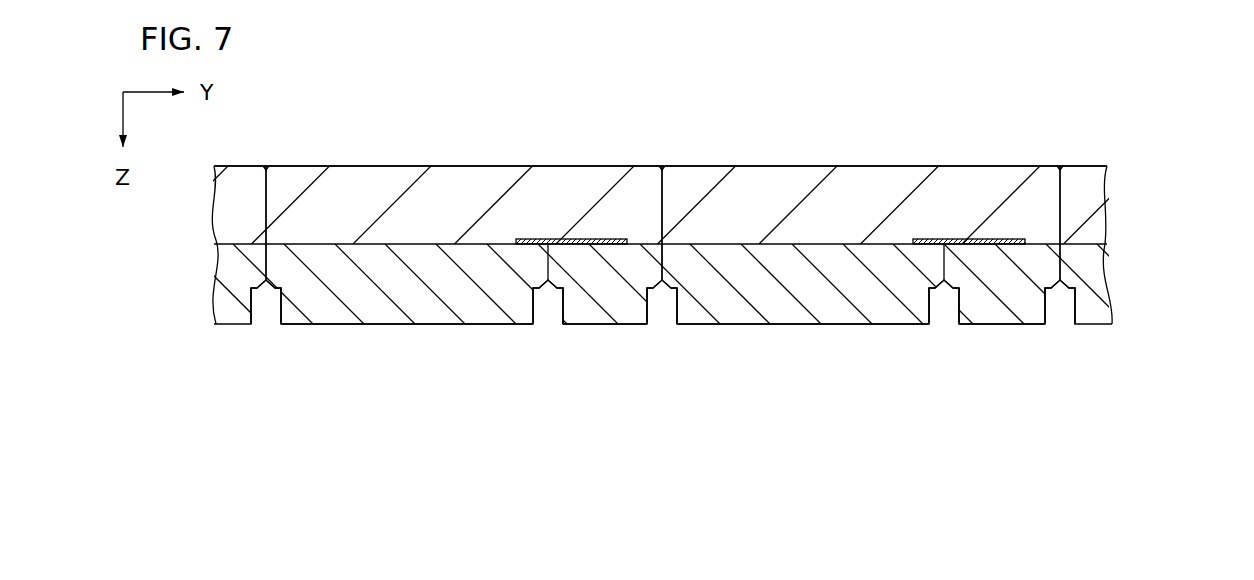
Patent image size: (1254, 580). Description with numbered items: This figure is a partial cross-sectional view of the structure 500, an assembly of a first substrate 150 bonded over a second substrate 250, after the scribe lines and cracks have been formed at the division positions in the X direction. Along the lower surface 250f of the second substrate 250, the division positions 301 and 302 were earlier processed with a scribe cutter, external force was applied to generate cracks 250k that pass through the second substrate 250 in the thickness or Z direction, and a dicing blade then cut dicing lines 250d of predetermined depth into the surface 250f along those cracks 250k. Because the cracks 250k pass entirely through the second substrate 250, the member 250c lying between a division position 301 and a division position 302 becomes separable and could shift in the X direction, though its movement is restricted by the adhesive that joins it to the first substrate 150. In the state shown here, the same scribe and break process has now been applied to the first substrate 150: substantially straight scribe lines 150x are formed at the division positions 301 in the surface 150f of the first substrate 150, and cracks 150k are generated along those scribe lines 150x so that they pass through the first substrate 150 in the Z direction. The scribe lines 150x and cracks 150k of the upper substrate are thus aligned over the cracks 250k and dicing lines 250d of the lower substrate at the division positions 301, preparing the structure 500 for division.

The structure 500 is at (872, 138).
The first substrate 150 is at (1085, 213).
The surface of the first substrate 150f is at (466, 160).
The scribe lines of the first substrate 150x is at (266, 165).
The cracks of the first substrate 150k is at (265, 211).
The second substrate 250 is at (1098, 283).
The cracks of the second substrate 250k is at (264, 276).
The member 250c is at (621, 297).
The surface of the second substrate 250f is at (436, 328).
The dicing lines 250d is at (257, 306).
The division position 302 is at (551, 329).
The division position 301 is at (284, 159).